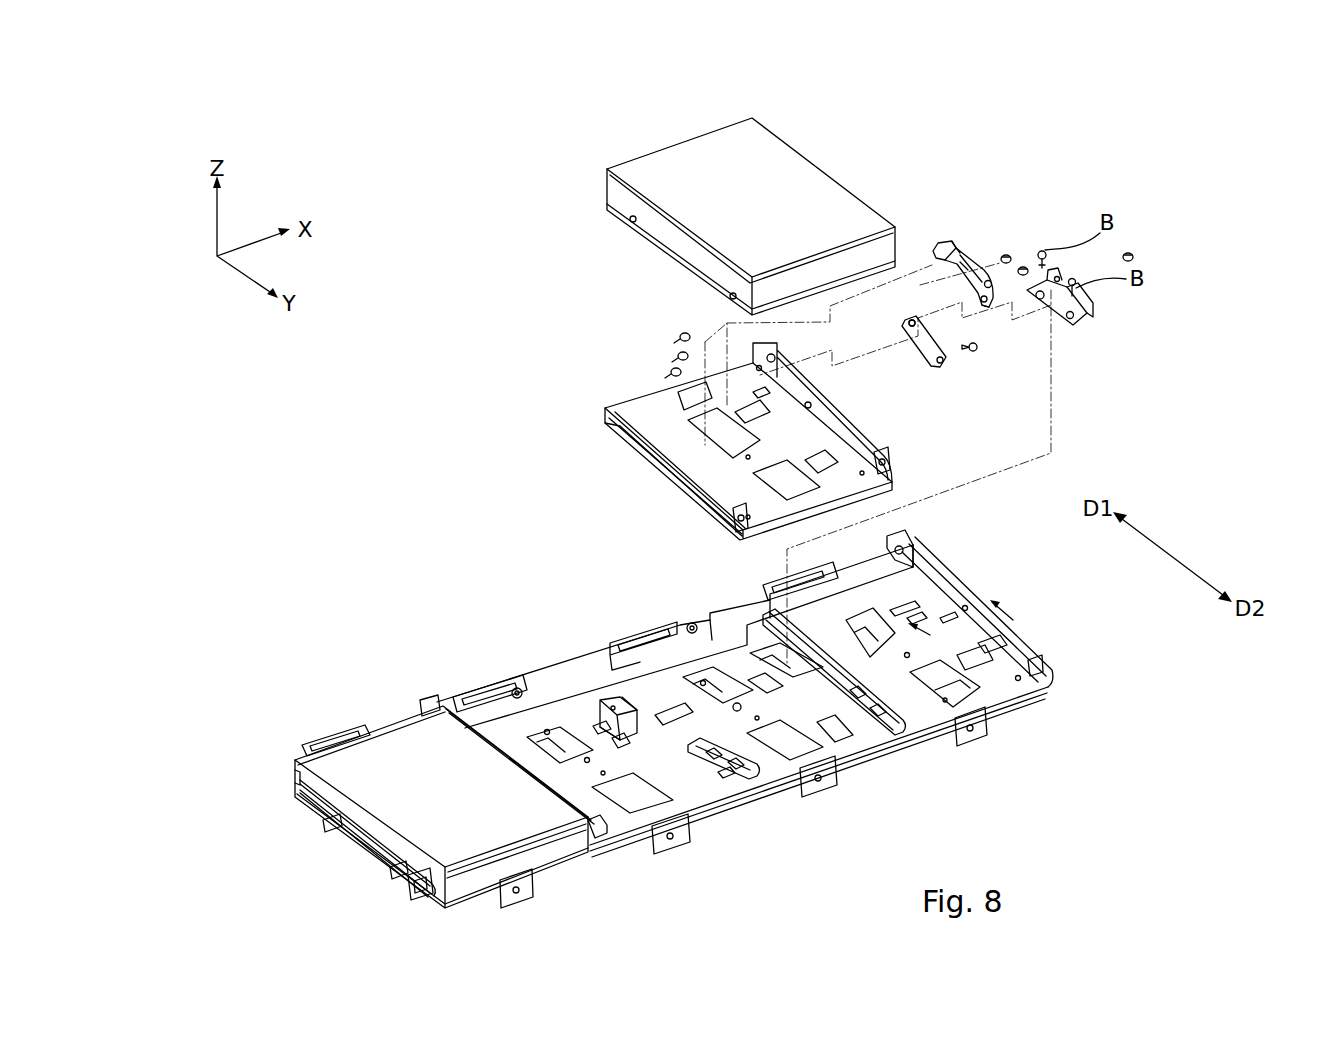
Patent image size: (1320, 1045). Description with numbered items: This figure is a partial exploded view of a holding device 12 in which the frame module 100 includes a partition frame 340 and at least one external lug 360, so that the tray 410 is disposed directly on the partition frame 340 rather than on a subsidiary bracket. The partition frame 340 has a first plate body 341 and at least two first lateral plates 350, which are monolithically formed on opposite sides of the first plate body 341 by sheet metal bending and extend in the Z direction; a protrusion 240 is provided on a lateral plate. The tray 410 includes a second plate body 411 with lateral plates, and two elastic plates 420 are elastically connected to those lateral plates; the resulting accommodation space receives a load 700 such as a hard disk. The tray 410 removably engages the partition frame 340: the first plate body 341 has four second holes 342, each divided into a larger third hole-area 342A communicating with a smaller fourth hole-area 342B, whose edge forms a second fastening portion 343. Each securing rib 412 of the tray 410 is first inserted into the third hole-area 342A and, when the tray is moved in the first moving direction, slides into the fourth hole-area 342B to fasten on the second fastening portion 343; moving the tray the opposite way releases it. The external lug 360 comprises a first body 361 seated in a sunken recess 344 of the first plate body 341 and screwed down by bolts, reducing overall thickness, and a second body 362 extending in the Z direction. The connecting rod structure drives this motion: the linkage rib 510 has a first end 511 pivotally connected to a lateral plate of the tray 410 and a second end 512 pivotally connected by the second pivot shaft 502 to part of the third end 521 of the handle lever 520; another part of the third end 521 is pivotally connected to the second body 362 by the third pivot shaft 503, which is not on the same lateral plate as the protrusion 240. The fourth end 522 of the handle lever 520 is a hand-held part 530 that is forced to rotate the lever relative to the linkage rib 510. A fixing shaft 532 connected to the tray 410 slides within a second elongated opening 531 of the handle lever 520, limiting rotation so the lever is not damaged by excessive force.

The holding device 12 is at (1221, 148).
The frame module 100 is at (212, 343).
The load 700 is at (808, 176).
The tray 410 is at (640, 392).
The second plate body 411 is at (690, 455).
The securing rib 412 is at (822, 460).
The elastic plate 420 is at (888, 462).
The linkage rib 510 is at (925, 345).
The first end 511 is at (935, 362).
The second end 512 is at (908, 321).
The handle lever 520 is at (1007, 254).
The third end 521 is at (992, 306).
The fourth end 522 is at (957, 250).
The hand-held part 530 is at (940, 245).
The second elongated opening 531 is at (966, 269).
The fixing shaft 532 is at (1021, 266).
The second pivot shaft 502 is at (1028, 265).
The third pivot shaft 503 is at (1134, 257).
The external lug 360 is at (1140, 311).
The first body 361 is at (1080, 326).
The second body 362 is at (1094, 310).
The partition frame 340 is at (677, 719).
The first plate body 341 is at (770, 770).
The second hole 342 is at (551, 639).
The third hole-area 342A is at (620, 742).
The fourth hole-area 342B is at (596, 727).
The second fastening portion 343 is at (607, 745).
The sunken recess 344 is at (634, 706).
The first lateral plate 350 is at (895, 728).
The protrusion 240 is at (723, 777).